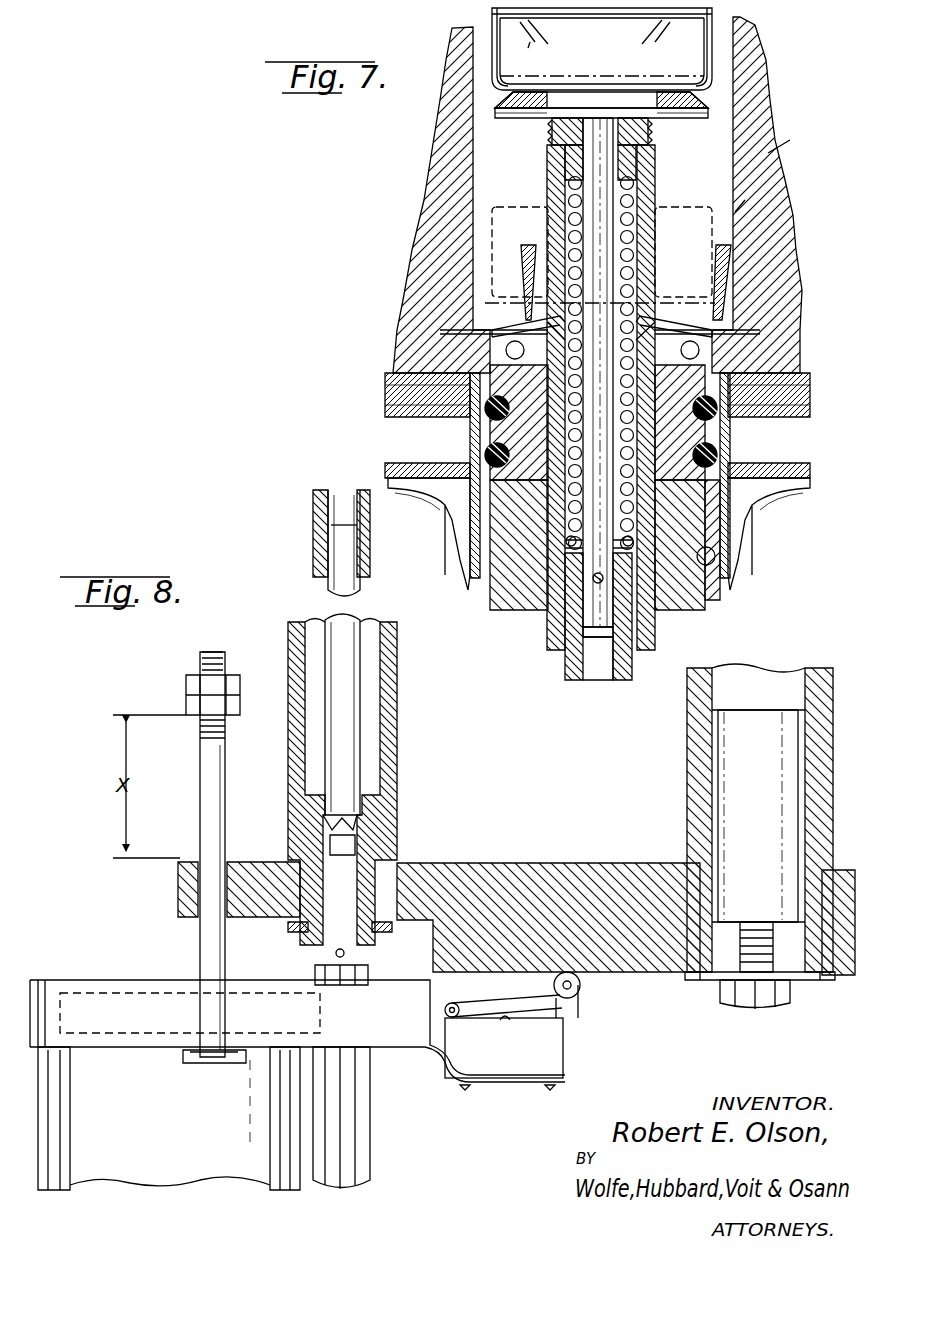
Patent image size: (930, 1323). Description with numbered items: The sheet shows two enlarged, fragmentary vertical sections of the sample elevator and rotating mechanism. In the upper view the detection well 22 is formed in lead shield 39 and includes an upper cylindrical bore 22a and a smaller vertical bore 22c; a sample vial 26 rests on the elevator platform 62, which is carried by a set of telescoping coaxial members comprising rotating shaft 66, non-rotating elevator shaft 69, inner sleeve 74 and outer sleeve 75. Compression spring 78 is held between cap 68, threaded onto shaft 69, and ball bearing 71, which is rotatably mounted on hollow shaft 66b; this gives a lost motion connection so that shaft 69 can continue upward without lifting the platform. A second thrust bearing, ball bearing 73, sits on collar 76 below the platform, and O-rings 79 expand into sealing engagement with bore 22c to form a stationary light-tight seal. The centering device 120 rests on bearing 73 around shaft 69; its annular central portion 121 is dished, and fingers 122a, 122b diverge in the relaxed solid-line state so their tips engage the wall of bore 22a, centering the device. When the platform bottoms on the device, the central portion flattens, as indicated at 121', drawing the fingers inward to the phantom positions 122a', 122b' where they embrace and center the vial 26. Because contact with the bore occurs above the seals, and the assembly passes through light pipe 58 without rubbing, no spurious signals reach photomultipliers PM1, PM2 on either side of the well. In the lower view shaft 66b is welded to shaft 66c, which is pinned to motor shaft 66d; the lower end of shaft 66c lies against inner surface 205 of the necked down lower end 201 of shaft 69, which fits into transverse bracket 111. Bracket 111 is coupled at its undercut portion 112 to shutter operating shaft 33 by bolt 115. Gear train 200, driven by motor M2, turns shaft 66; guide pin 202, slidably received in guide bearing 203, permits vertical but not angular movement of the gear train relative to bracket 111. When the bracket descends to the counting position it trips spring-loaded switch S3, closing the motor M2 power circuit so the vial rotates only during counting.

In FIG. 7, the detection well 22 is at (716, 132).
In FIG. 7, the lead shield 39 is at (768, 153).
In FIG. 7, the upper cylindrical bore 22a is at (735, 212).
In FIG. 7, the sample vial 26 is at (612, 42).
In FIG. 7, the elevator platform 62 is at (548, 100).
In FIG. 7, the cap 68 is at (648, 126).
In FIG. 7, the non-rotating elevator shaft 69 is at (650, 188).
In FIG. 8, the non-rotating elevator shaft 69 is at (393, 780).
In FIG. 7, the rotating shaft 66 is at (563, 661).
In FIG. 8, the rotating shaft 66 is at (313, 543).
In FIG. 7, the compression spring 78 is at (632, 213).
In FIG. 7, the finger 122b is at (519, 252).
In FIG. 7, the finger in phantom position 122b' is at (515, 251).
In FIG. 7, the finger 122a is at (726, 252).
In FIG. 7, the finger in phantom position 122a' is at (755, 270).
In FIG. 7, the centering device 120 is at (527, 278).
In FIG. 7, the annular central portion 121 is at (605, 309).
In FIG. 7, the flattened central portion 121' is at (635, 296).
In FIG. 7, the ball bearing 73 is at (492, 343).
In FIG. 7, the vertical bore 22c is at (738, 362).
In FIG. 7, the collar 76 is at (472, 396).
In FIG. 7, the O-rings 79 is at (722, 432).
In FIG. 7, the photomultiplier PM1 is at (402, 465).
In FIG. 7, the photomultiplier PM2 is at (775, 523).
In FIG. 7, the ball bearing 71 is at (545, 563).
In FIG. 7, the inner sleeve 74 is at (672, 600).
In FIG. 7, the outer sleeve 75 is at (712, 593).
In FIG. 7, the light pipe 58 is at (712, 565).
In FIG. 8, the hollow shaft 66b is at (328, 560).
In FIG. 8, the shaft 66c is at (352, 635).
In FIG. 8, the inner surface 205 is at (330, 865).
In FIG. 8, the guide pin 202 is at (212, 795).
In FIG. 8, the guide bearing 203 is at (182, 893).
In FIG. 8, the transverse bracket 111 is at (583, 870).
In FIG. 8, the necked down lower end 201 is at (378, 932).
In FIG. 8, the motor shaft 66d is at (333, 945).
In FIG. 8, the gear train 200 is at (160, 1000).
In FIG. 8, the sample rotating motor M2 is at (177, 1142).
In FIG. 8, the switch S3 is at (512, 1054).
In FIG. 8, the shutter operating shaft 33 is at (690, 738).
In FIG. 8, the bolt 115 is at (772, 1008).
In FIG. 8, the undercut portion 112 is at (700, 975).